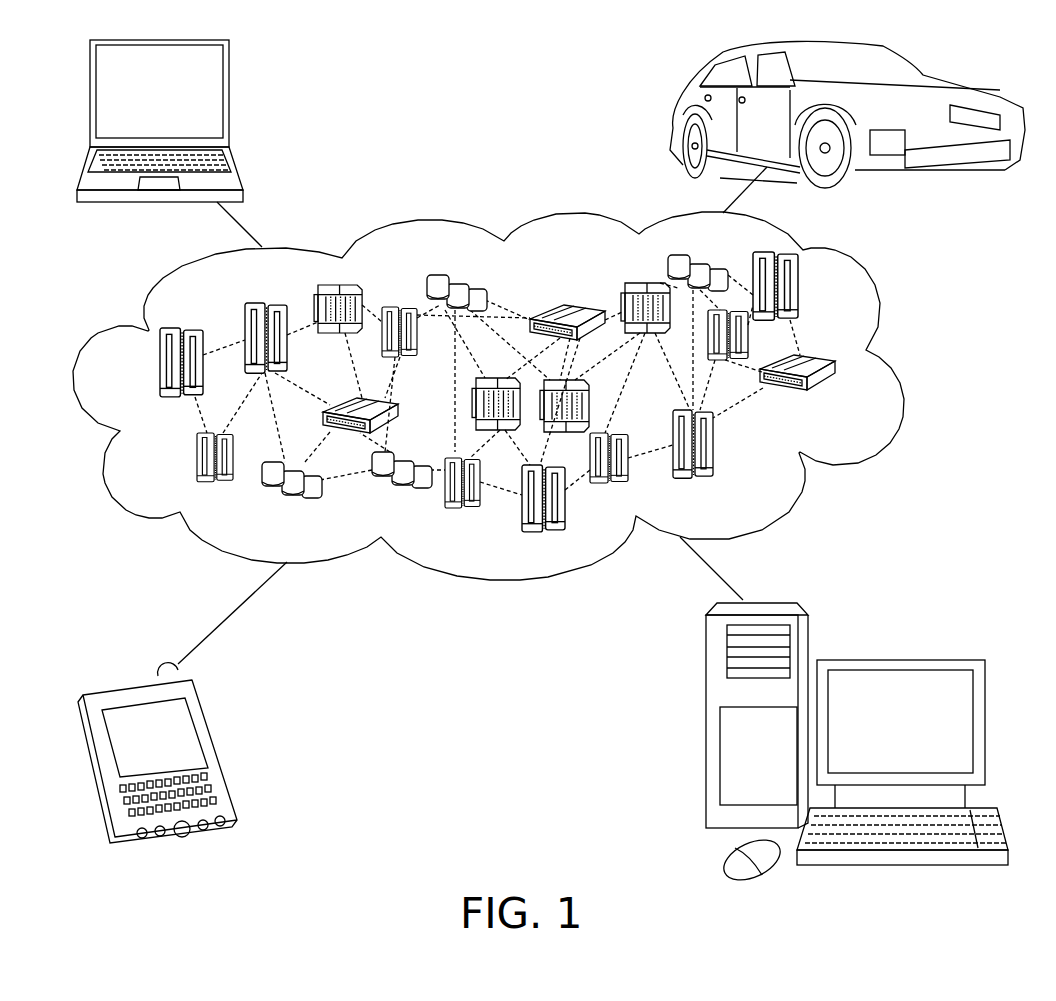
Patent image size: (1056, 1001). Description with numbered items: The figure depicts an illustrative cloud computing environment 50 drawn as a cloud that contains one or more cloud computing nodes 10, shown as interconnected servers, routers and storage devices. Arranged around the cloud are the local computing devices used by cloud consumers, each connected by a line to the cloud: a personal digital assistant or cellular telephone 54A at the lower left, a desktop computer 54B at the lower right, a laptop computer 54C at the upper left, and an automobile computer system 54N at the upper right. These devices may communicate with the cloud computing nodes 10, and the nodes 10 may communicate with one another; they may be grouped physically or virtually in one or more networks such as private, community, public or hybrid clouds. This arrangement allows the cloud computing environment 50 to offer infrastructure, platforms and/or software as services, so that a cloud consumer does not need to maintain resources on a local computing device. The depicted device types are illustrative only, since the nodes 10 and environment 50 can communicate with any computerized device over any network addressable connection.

The cloud computing nodes 10 is at (847, 402).
The cloud computing environment 50 is at (897, 373).
The personal digital assistant (PDA) or cellular telephone 54A is at (217, 749).
The desktop computer 54B is at (897, 660).
The laptop computer 54C is at (229, 100).
The automobile computer system 54N is at (672, 118).